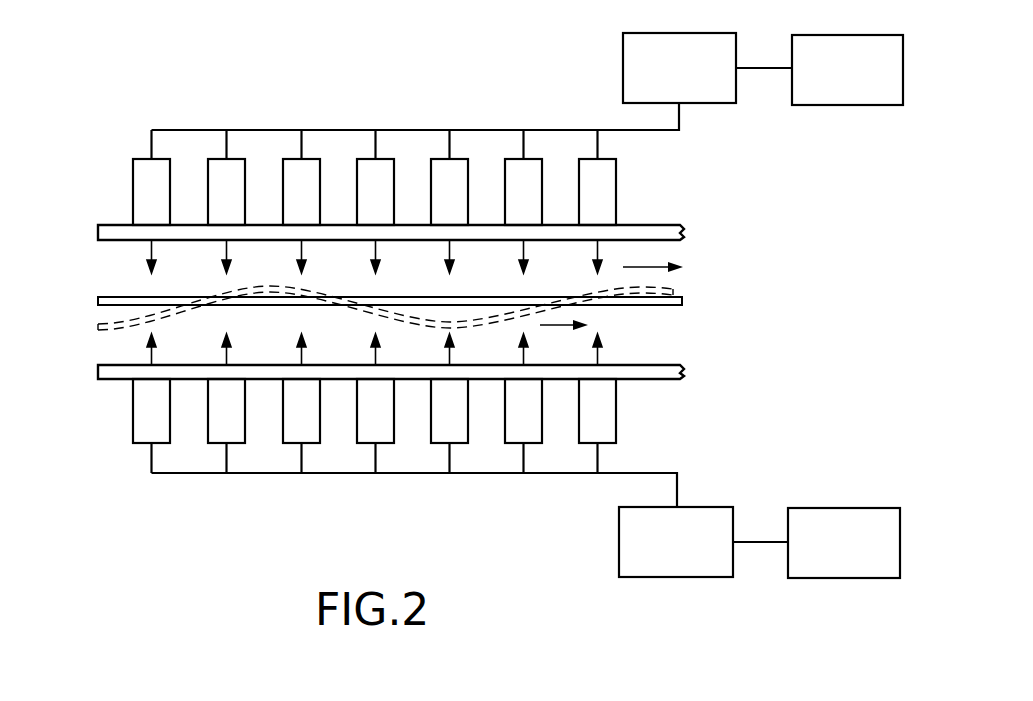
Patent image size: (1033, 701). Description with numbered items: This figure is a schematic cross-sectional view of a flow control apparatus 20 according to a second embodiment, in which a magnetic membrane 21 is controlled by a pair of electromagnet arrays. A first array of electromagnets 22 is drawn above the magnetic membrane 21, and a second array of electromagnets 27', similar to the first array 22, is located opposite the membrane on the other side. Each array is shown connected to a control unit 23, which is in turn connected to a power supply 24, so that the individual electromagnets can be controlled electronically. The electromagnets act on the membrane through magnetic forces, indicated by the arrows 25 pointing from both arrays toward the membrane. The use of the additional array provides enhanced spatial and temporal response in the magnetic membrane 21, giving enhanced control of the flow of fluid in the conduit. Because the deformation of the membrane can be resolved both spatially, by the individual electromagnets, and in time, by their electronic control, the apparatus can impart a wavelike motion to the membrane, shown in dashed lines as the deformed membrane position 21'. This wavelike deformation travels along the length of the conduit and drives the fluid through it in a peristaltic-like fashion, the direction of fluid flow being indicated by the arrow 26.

The apparatus for conveying a strip 20 is at (280, 109).
The magnetic membrane 21 is at (359, 278).
The wavelike motion of the magnetic membrane 21' is at (355, 322).
The first array of electromagnets 22 is at (224, 181).
The control unit 23 is at (705, 103).
The power supply 24 is at (845, 105).
The magnetic force arrows 25 is at (450, 258).
The strip transport direction arrow 26 is at (631, 291).
The lower electromagnets 27' is at (372, 452).